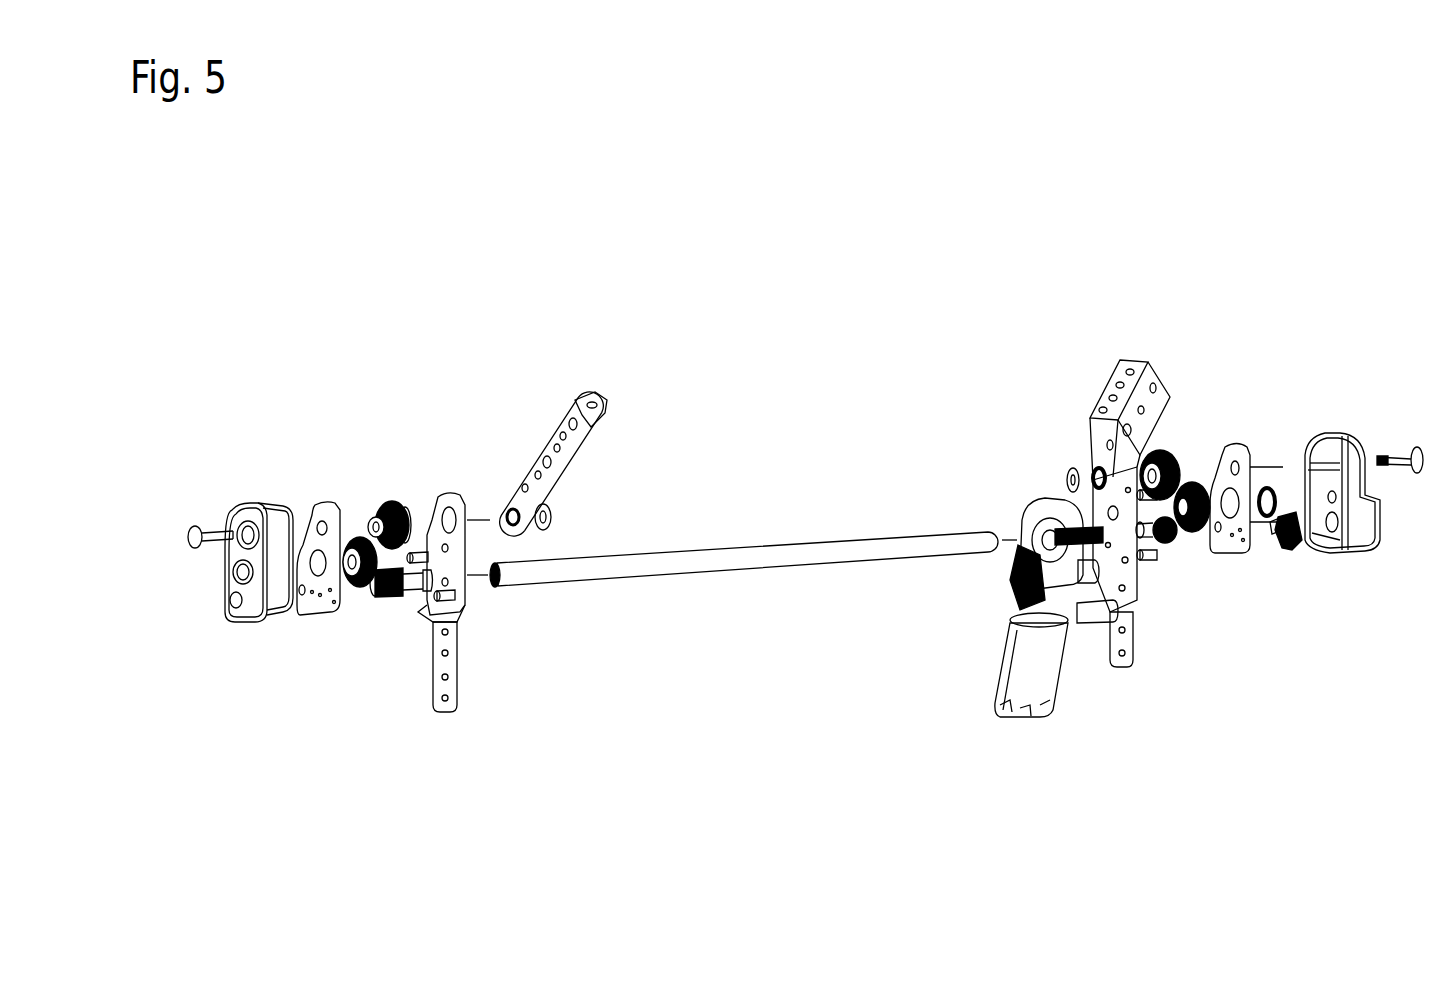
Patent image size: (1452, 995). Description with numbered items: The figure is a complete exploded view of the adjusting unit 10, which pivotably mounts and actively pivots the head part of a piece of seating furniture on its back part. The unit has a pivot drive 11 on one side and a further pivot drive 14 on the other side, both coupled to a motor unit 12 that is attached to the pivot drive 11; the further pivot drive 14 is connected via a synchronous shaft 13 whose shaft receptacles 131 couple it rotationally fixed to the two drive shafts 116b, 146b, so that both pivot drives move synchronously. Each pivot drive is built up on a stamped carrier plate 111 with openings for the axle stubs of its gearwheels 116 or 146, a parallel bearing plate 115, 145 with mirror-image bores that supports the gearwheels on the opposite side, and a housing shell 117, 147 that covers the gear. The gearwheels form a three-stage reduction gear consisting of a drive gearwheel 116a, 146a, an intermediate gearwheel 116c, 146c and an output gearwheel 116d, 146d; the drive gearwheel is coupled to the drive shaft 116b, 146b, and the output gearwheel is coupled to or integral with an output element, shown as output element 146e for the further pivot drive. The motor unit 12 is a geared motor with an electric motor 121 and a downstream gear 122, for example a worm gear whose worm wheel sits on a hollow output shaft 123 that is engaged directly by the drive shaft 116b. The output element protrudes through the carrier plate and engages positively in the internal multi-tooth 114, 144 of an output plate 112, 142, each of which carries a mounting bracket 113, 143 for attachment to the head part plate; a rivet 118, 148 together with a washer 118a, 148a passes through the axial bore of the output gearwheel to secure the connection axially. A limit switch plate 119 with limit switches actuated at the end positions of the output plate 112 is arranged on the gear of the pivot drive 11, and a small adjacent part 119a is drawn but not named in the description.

The adjusting unit 10 is at (915, 303).
The pivot drive 11 is at (1168, 630).
The motor unit 12 is at (980, 672).
The synchronous shaft 13 is at (845, 553).
The further pivot drive 14 is at (358, 757).
The carrier plate 111 is at (447, 688).
The output plate 112 is at (1108, 458).
The mounting bracket 113 is at (1140, 360).
The internal multi-tooth 114 is at (1096, 470).
The bearing plate 115 is at (1247, 447).
The gearwheels 116 is at (1205, 568).
The drive gearwheel 116a is at (1177, 540).
The drive shaft 116b is at (1142, 515).
The intermediate gearwheel 116c is at (1152, 463).
The output gearwheel 116d is at (1170, 457).
The housing shell 117 is at (1352, 445).
The rivet 118 is at (1417, 448).
The washer 118a is at (1070, 470).
The limit switch plate 119 is at (1293, 547).
The washer 119a is at (1267, 488).
The electric motor 121 is at (1037, 675).
The gear 122 is at (1020, 580).
The hollow output shaft 123 is at (1017, 547).
The shaft receptacle 131 is at (497, 587).
The output plate 142 is at (548, 448).
The mounting bracket 143 is at (588, 397).
The internal multi-tooth 144 is at (508, 512).
The bearing plate 145 is at (315, 605).
The gearwheels 146 is at (413, 445).
The drive gearwheel 146a is at (392, 595).
The drive shaft 146b is at (420, 590).
The intermediate gearwheel 146c is at (357, 605).
The output gearwheel 146d is at (370, 507).
The output element 146e is at (407, 518).
The housing shell 147 is at (263, 503).
The rivet 148 is at (188, 527).
The washer 148a is at (552, 515).